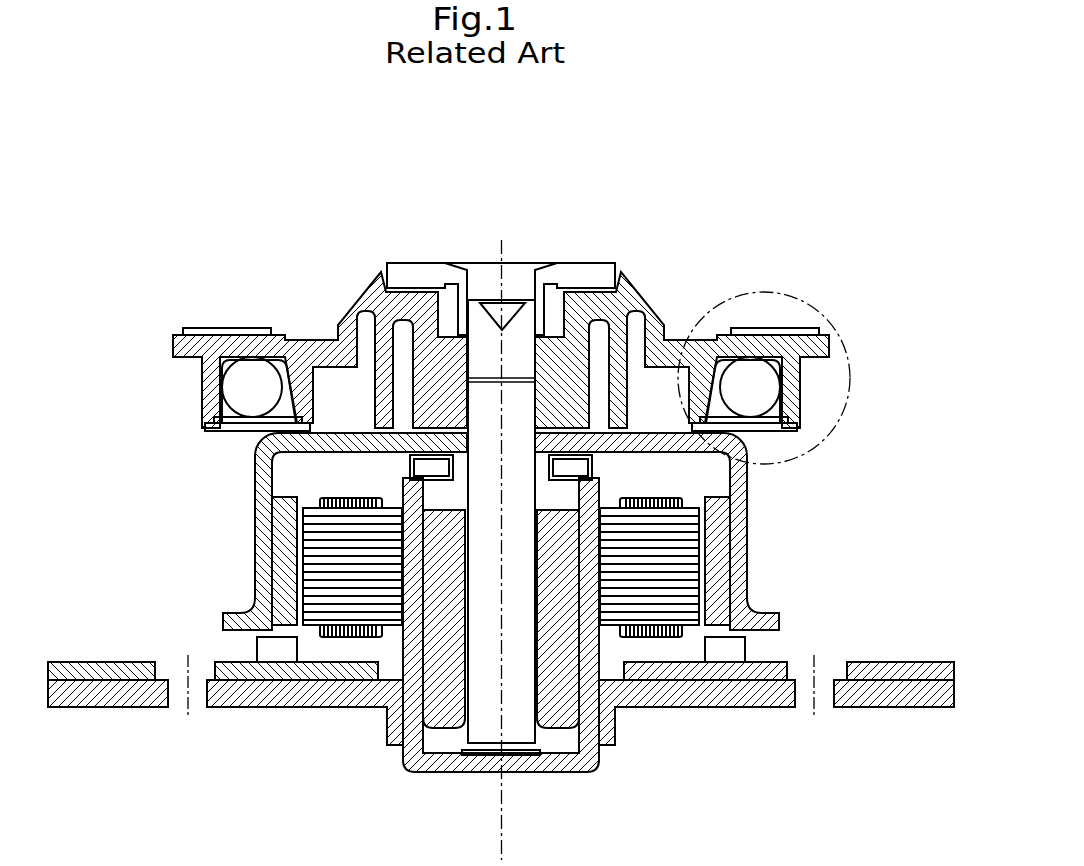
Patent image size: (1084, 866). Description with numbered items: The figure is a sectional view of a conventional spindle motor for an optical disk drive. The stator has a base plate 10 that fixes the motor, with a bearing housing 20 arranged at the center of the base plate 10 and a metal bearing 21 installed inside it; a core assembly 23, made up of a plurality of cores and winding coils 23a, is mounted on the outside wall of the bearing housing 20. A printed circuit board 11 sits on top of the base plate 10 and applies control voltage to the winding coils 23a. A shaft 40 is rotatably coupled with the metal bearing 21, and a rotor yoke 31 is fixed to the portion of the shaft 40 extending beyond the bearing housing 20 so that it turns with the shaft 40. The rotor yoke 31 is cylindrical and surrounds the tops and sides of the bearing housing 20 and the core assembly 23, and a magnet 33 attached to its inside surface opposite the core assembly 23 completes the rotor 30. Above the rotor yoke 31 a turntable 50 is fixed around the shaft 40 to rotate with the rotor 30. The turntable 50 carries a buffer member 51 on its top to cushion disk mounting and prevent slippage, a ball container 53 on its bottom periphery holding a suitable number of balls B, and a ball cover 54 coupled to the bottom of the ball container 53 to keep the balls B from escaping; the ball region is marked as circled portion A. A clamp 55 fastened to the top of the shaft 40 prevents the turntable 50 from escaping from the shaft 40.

The base plate 10 is at (893, 707).
The printed circuit board 11 is at (900, 662).
The bearing housing 20 is at (410, 762).
The metal bearing 21 is at (556, 729).
The core assembly 23 is at (320, 590).
The winding coils 23a is at (345, 638).
The rotor 30 is at (480, 528).
The rotor yoke 31 is at (745, 548).
The magnet 33 is at (280, 530).
The shaft 40 is at (487, 745).
The turntable 50 is at (630, 290).
The buffer member 51 is at (775, 328).
The ball container 53 is at (776, 421).
The ball cover 54 is at (760, 433).
The clamp 55 is at (415, 273).
The enlarged portion A is at (828, 312).
The balls B is at (765, 388).